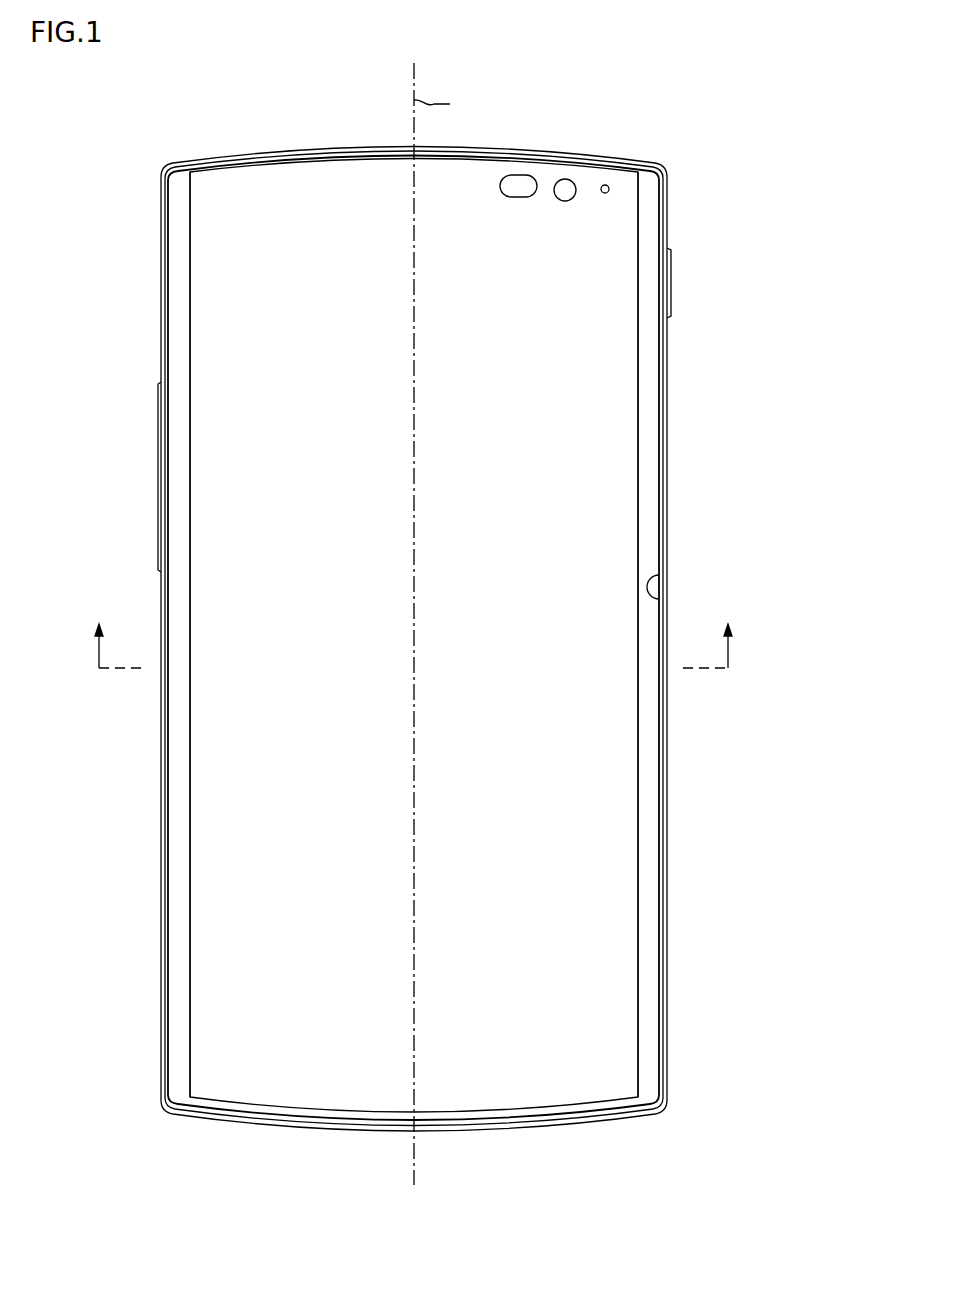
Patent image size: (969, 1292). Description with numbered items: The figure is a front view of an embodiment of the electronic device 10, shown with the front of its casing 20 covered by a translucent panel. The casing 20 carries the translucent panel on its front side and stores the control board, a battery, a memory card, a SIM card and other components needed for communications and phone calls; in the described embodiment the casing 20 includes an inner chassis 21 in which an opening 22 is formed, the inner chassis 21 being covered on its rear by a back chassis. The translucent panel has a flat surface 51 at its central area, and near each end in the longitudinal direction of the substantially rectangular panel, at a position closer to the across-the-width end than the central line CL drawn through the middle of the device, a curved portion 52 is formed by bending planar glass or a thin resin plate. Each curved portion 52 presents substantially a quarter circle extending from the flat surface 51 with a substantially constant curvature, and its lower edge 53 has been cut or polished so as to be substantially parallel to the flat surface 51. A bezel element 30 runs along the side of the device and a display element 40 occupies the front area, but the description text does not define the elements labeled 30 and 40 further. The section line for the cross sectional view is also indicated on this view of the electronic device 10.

The electronic device 10 is at (658, 120).
The casing 20 is at (668, 402).
The inner chassis 21 is at (414, 638).
The opening 22 is at (668, 598).
The bezel frame 30 is at (665, 757).
The display unit 40 is at (541, 515).
The flat surface 51 is at (582, 862).
The curved portion 52 is at (645, 912).
The lower edge 53 is at (756, 832).